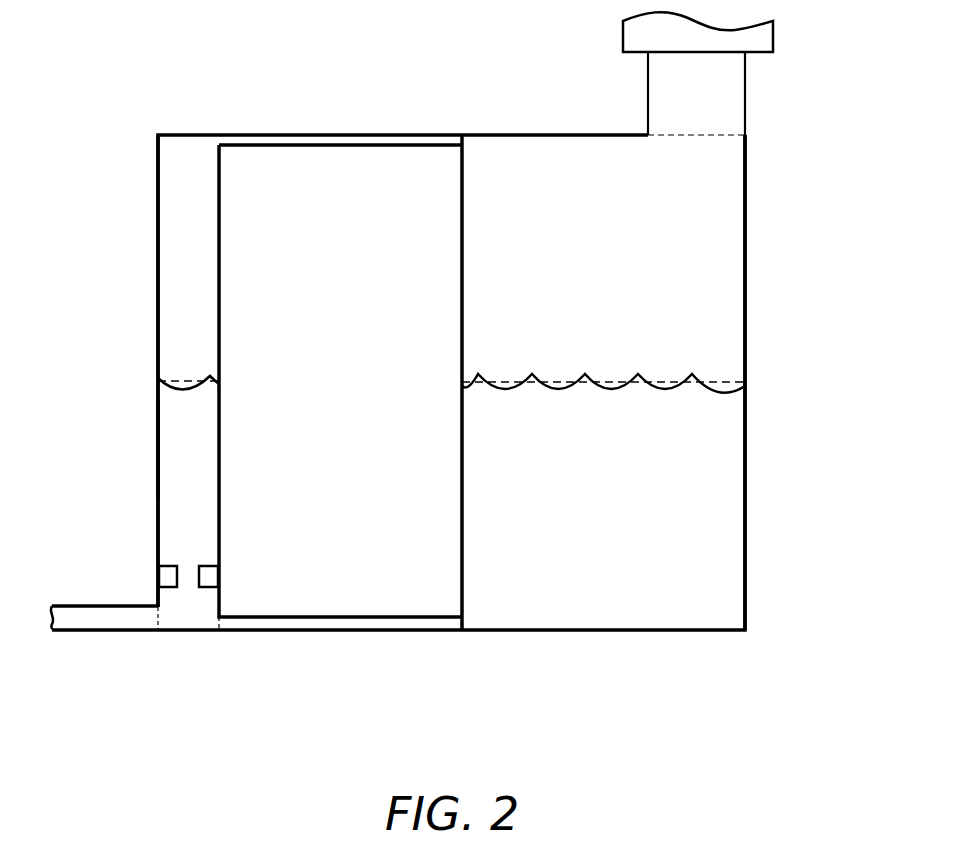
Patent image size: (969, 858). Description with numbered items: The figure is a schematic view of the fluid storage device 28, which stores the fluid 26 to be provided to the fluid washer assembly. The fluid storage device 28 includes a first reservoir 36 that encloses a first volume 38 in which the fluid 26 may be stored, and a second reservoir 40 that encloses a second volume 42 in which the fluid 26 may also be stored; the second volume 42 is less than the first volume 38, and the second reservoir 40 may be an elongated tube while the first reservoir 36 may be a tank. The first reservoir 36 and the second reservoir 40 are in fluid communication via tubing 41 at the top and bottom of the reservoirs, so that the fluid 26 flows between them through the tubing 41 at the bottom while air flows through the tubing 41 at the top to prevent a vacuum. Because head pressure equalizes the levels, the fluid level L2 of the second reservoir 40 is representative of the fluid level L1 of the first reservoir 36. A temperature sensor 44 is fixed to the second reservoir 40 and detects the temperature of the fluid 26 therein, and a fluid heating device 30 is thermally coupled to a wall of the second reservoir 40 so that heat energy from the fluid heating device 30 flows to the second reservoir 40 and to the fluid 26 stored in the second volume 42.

The fluid storage device 28 is at (260, 100).
The first reservoir 36 is at (461, 256).
The tubing 41 is at (330, 148).
The second reservoir 40 is at (219, 206).
The second volume 42 is at (155, 452).
The first volume 38 is at (748, 452).
The fluid 26 is at (556, 389).
The fluid level of the first reservoir L1 is at (658, 380).
The fluid level of the second reservoir L2 is at (170, 370).
The fluid heating device 30 is at (165, 578).
The temperature sensor 44 is at (211, 575).